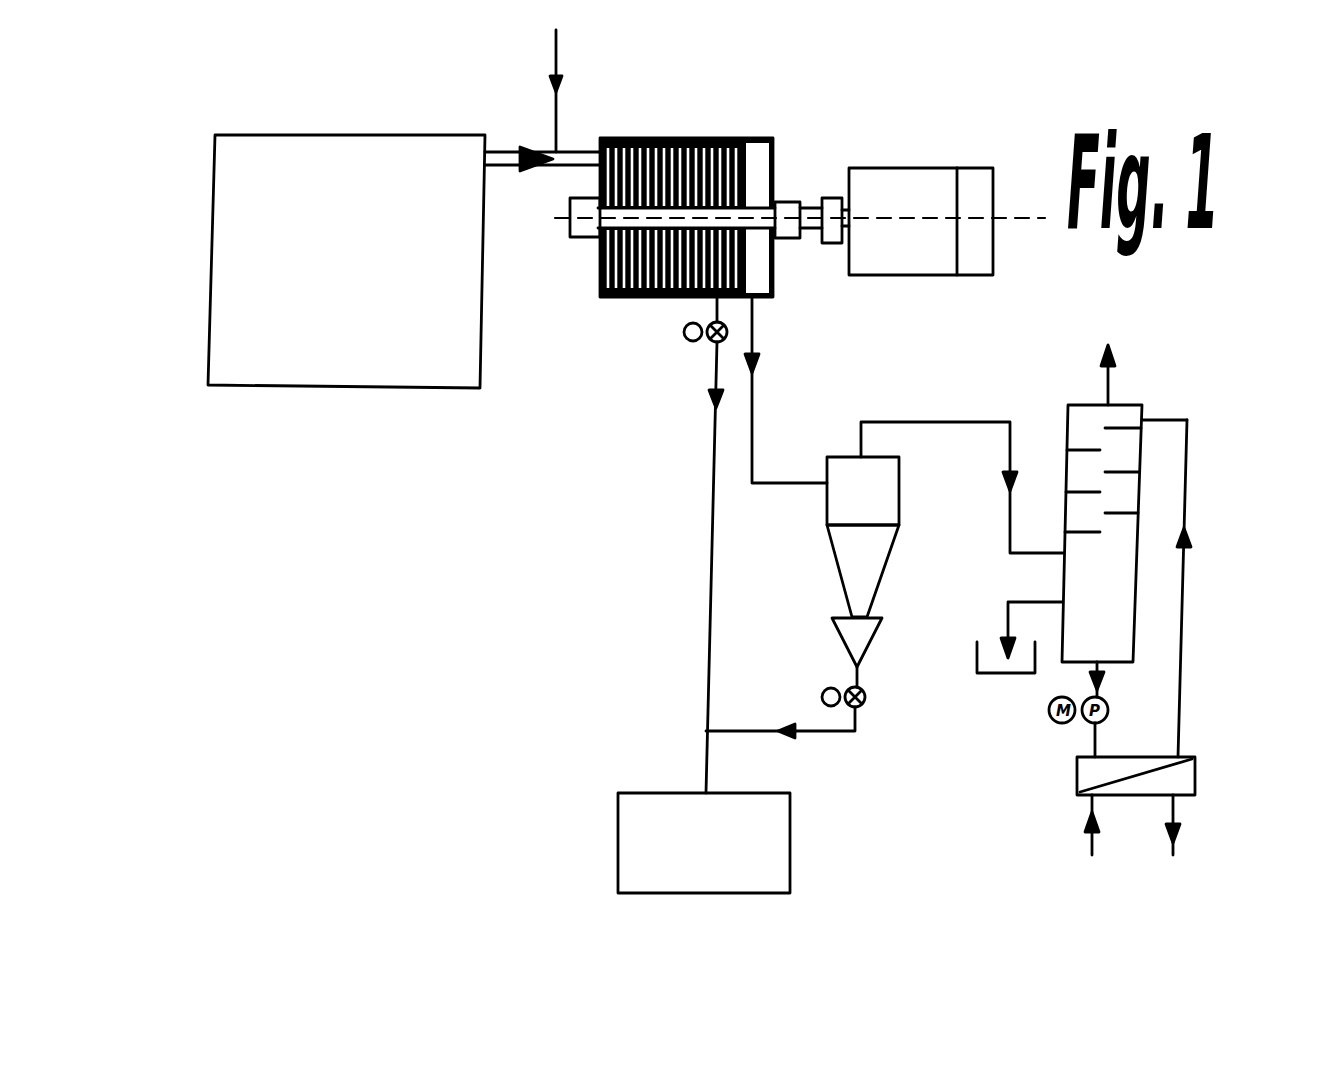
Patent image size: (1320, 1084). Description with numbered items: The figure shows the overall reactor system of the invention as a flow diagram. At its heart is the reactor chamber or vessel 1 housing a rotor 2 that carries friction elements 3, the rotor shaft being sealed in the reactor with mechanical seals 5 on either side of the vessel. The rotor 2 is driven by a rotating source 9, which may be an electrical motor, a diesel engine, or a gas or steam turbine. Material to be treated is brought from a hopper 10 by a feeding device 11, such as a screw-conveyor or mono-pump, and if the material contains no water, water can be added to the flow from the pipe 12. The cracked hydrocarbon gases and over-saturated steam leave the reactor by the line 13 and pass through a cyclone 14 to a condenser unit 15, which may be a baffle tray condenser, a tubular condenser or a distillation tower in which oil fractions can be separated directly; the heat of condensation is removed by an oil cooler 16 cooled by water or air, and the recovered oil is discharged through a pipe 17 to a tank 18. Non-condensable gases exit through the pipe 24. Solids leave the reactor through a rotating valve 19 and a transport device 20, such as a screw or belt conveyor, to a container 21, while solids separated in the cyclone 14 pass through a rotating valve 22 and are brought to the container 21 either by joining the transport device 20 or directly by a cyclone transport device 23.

The reactor chamber 1 is at (662, 138).
The rotor 2 is at (767, 197).
The friction elements 3 is at (740, 138).
The mechanical seals 5 is at (575, 238).
The rotating source 9 is at (915, 168).
The hopper 10 is at (480, 340).
The feeding device 11 is at (492, 147).
The pipe 12 is at (548, 47).
The filtrate line 13 is at (760, 345).
The cyclone 14 is at (899, 487).
The condenser unit 15 is at (1155, 590).
The oil cooler 16 is at (1197, 773).
The pipe 17 is at (1005, 618).
The tank 18 is at (977, 673).
The rotating valve 19 is at (690, 342).
The transport device 20 is at (713, 538).
The container 21 is at (790, 808).
The rotating valve 22 is at (868, 702).
The cyclone transport device 23 is at (833, 731).
The pipe 24 is at (1112, 345).